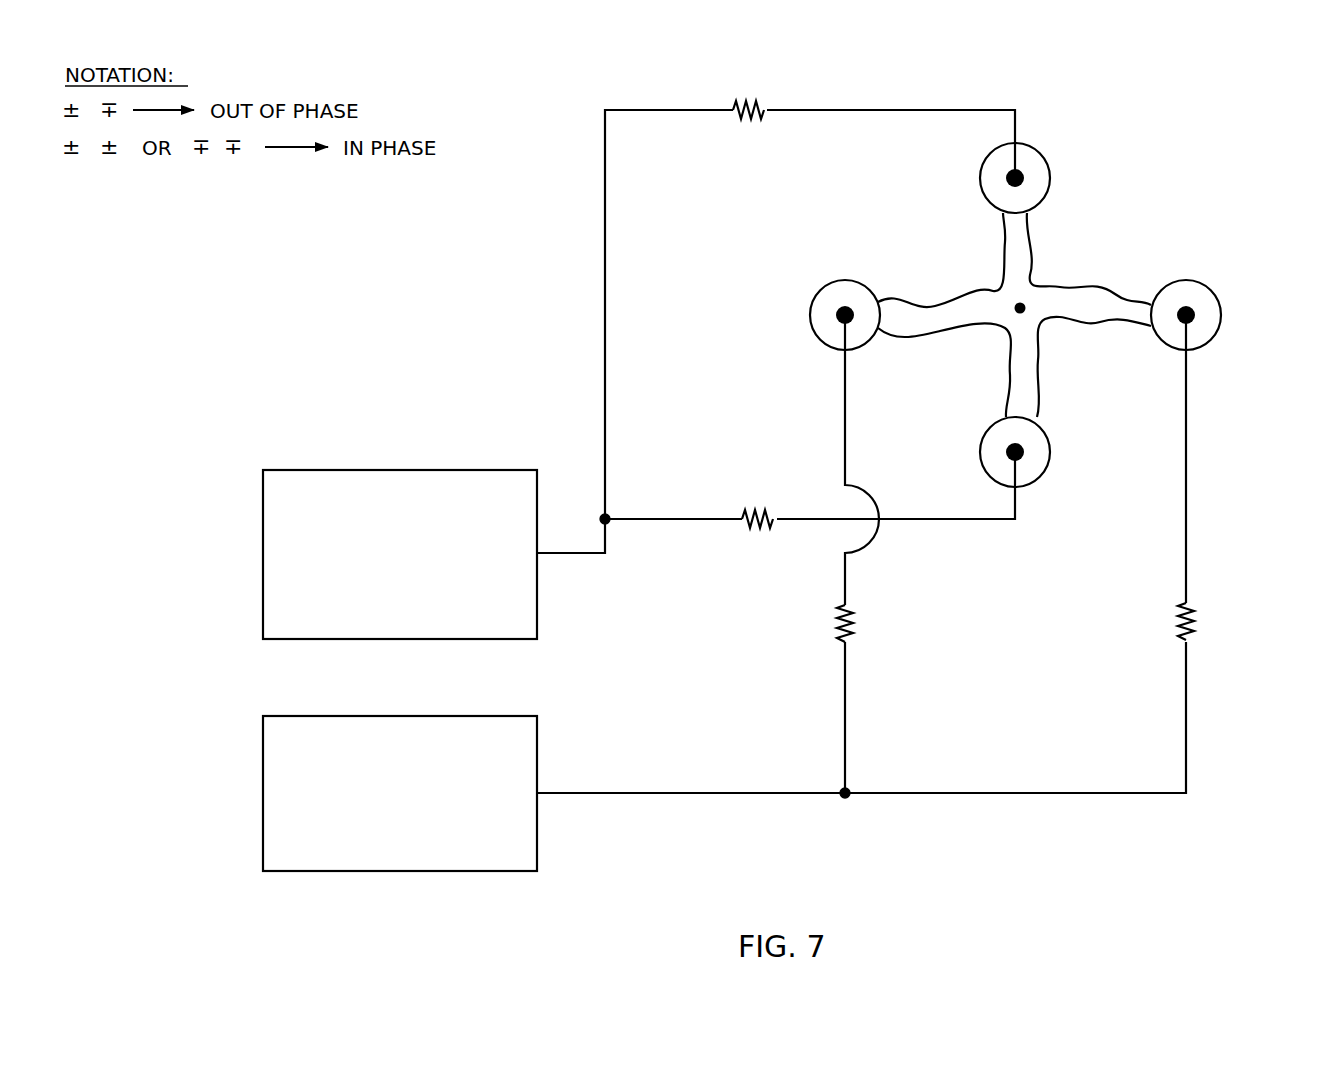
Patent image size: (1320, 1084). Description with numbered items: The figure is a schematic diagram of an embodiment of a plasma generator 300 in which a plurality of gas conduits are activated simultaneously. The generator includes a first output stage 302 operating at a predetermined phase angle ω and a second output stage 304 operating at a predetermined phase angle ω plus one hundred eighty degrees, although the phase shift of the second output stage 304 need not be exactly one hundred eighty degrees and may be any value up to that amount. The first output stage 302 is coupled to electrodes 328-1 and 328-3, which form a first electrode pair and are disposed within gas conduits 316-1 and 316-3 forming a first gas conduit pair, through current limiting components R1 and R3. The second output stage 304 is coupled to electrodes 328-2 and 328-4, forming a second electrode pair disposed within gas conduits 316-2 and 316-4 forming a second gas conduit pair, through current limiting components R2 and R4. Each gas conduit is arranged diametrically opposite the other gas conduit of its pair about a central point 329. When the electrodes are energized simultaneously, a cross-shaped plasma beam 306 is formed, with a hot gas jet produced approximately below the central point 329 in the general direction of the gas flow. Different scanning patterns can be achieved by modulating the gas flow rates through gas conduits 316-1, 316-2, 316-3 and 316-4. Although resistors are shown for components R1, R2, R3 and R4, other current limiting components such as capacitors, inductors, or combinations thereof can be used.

The plasma generator 300 is at (492, 349).
The first output stage 302 is at (400, 640).
The second output stage 304 is at (400, 872).
The cross-shaped plasma beam 306 is at (1062, 302).
The gas conduit 316-1 is at (1040, 152).
The gas conduit 316-2 is at (1210, 340).
The gas conduit 316-3 is at (1042, 481).
The gas conduit 316-4 is at (845, 280).
The electrode 328-1 is at (1008, 172).
The electrode 328-2 is at (1188, 313).
The electrode 328-3 is at (1018, 452).
The electrode 328-4 is at (845, 318).
The central point 329 is at (1020, 318).
The current limiting component R1 is at (748, 92).
The current limiting component R2 is at (1205, 621).
The current limiting component R3 is at (757, 508).
The current limiting component R4 is at (864, 623).